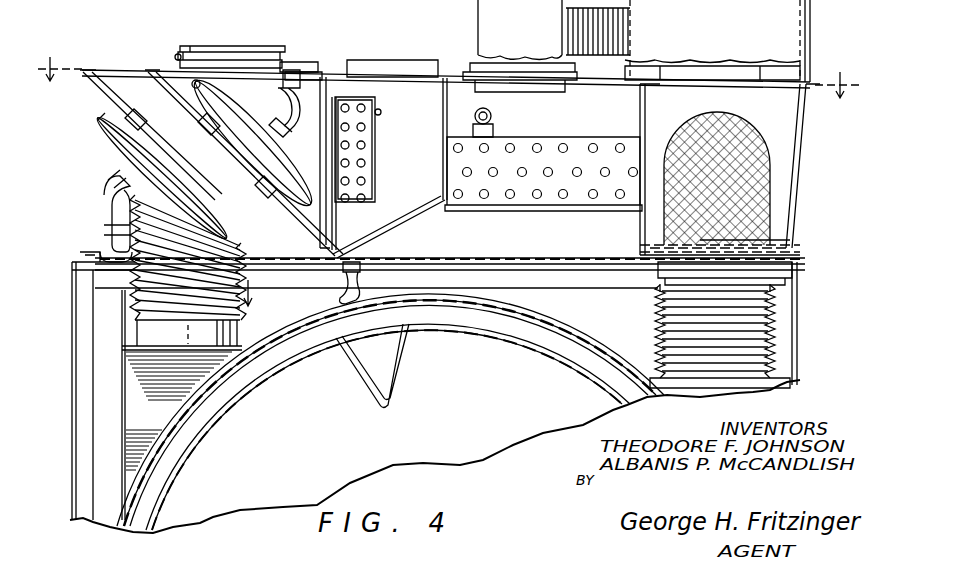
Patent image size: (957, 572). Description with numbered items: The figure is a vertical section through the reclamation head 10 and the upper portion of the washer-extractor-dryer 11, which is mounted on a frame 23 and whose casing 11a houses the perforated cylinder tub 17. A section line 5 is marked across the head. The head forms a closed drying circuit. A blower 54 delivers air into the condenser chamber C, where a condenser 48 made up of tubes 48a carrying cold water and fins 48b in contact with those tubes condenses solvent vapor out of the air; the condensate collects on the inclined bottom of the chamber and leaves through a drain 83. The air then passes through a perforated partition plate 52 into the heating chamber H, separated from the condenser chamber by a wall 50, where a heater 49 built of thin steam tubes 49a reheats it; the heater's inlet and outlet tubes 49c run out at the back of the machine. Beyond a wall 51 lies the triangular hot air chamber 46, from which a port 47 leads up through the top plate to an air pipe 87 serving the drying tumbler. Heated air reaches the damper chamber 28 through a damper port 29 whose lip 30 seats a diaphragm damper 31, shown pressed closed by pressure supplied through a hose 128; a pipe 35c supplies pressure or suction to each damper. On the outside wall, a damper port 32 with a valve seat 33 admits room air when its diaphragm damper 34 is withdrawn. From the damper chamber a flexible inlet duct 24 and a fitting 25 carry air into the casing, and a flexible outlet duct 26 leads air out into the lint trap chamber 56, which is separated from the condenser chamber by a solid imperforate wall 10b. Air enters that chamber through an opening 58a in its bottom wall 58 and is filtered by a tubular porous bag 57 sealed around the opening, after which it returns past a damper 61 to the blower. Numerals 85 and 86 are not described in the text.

The section line 5- 5 is at (450, 68).
The reclamation head 10 is at (818, 30).
The solid imperforate wall 10b is at (640, 112).
The washer-extractor-dryer 11 is at (698, 412).
The casing 11a is at (300, 322).
The perforated cylinder tub 17 is at (245, 403).
The frame 23 is at (78, 282).
The inlet air duct 24 is at (140, 300).
The fitting 25 is at (128, 410).
The outlet air duct 26 is at (648, 372).
The damper chamber 28 is at (105, 82).
The damper port 29 is at (255, 188).
The lip 30 is at (225, 140).
The diaphragm damper 31 is at (238, 84).
The damper port 32 is at (148, 128).
The valve seat 33 is at (103, 112).
The diaphragm damper 34 is at (97, 128).
The pipe 35c is at (288, 109).
The hot air chamber 46 is at (298, 60).
The port 47 is at (243, 68).
The condenser 48 is at (543, 182).
The tubes 48a is at (585, 147).
The fins 48b is at (563, 132).
The heater 49 is at (383, 149).
The thin tubes 49a is at (365, 167).
The inlet and outlet tubes 49c is at (364, 7).
The wall 50 is at (443, 98).
The wall 51 is at (338, 222).
The perforated partition plate 52 is at (415, 212).
The blower 54 is at (527, 35).
The lint trap chamber 56 is at (785, 130).
The tubular bag 57 is at (752, 173).
The bottom wall 58 is at (790, 245).
The opening 58a is at (775, 242).
The damper 61 is at (806, 42).
The drain 83 is at (362, 275).
The cover slab 85 is at (318, 66).
The elbow pipe 86 is at (92, 220).
The air pipe 87 is at (215, 42).
The hose 128 is at (310, 58).
The condenser chamber C is at (518, 119).
The heating chamber H is at (405, 141).